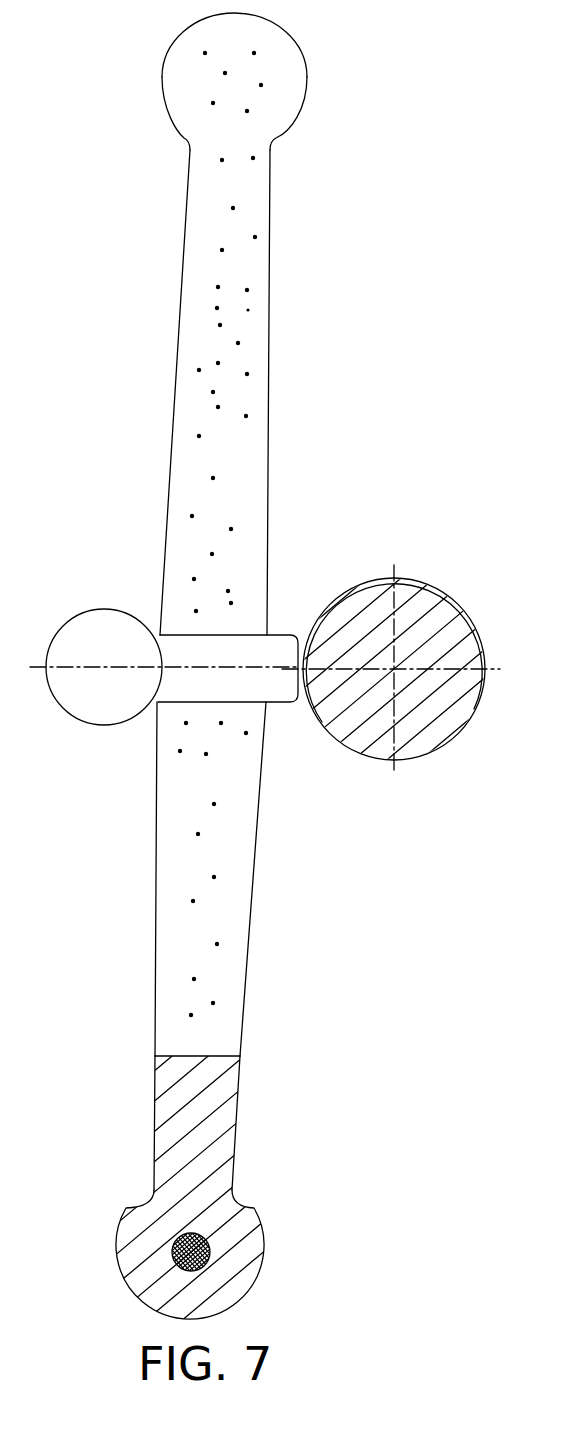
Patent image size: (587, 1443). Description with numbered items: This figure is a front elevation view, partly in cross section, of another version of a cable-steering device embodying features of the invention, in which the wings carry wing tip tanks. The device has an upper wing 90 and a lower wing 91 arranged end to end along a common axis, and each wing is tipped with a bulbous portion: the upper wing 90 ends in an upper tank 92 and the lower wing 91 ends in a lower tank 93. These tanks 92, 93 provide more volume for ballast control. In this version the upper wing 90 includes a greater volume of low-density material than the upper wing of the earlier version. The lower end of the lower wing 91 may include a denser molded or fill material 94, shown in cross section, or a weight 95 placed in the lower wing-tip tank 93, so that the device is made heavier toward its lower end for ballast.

The upper wing-tip tank 92 is at (300, 69).
The upper wing 90 is at (267, 359).
The lower wing 91 is at (249, 901).
The denser molded or fill material 94 is at (228, 1116).
The lower wing-tip tank 93 is at (252, 1216).
The weight 95 is at (178, 1246).